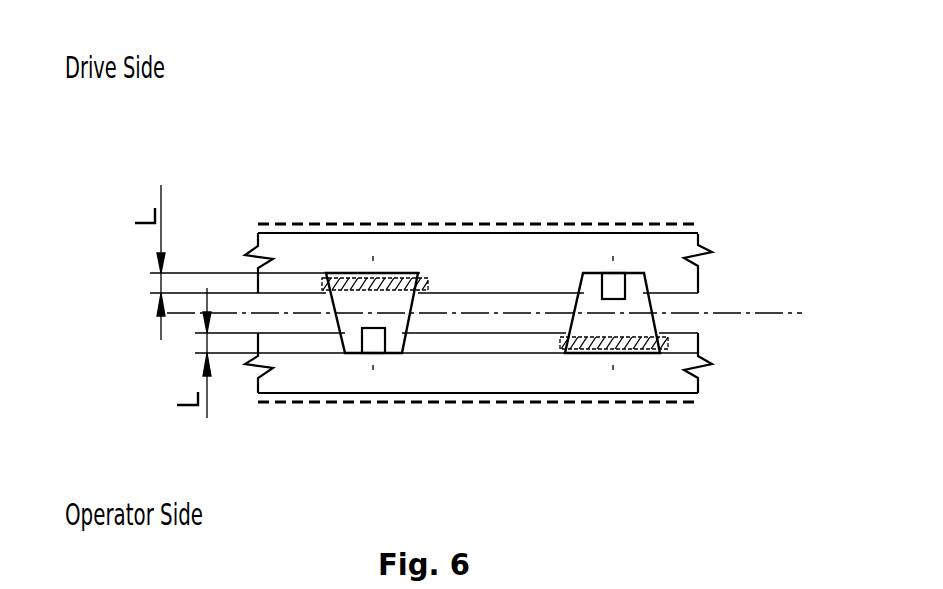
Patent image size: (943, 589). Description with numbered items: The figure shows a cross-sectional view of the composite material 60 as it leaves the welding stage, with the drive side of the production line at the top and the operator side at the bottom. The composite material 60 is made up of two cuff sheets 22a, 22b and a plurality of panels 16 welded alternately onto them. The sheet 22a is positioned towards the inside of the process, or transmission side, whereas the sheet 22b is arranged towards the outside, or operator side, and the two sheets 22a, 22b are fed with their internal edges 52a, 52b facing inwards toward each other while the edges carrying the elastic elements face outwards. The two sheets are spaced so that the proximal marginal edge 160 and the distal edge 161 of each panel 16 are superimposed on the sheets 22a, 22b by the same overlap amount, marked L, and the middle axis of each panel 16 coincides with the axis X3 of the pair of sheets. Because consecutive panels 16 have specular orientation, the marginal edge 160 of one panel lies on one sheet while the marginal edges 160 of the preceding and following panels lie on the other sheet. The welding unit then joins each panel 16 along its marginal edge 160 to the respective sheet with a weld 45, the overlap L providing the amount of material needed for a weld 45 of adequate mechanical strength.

The composite material 60 is at (478, 201).
The panel 16 is at (484, 255).
The marginal edge 160 is at (477, 300).
The distal edge 161 is at (498, 311).
The weld 45 is at (383, 283).
The internal edge 52a is at (424, 160).
The internal edge 52b is at (446, 409).
The sheet 22a is at (478, 172).
The sheet 22b is at (478, 455).
The axis of the pair of sheets X3 is at (767, 170).